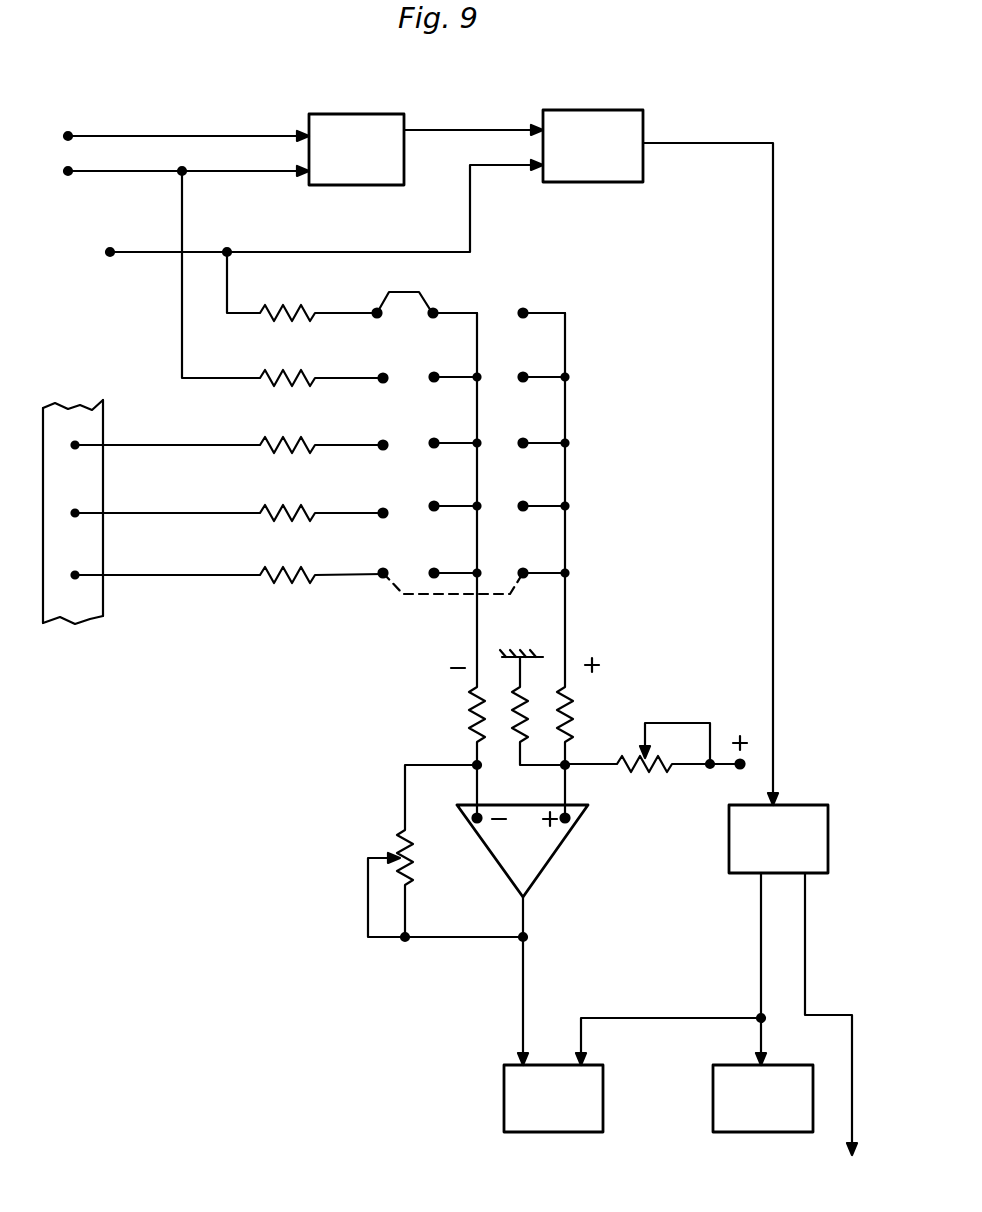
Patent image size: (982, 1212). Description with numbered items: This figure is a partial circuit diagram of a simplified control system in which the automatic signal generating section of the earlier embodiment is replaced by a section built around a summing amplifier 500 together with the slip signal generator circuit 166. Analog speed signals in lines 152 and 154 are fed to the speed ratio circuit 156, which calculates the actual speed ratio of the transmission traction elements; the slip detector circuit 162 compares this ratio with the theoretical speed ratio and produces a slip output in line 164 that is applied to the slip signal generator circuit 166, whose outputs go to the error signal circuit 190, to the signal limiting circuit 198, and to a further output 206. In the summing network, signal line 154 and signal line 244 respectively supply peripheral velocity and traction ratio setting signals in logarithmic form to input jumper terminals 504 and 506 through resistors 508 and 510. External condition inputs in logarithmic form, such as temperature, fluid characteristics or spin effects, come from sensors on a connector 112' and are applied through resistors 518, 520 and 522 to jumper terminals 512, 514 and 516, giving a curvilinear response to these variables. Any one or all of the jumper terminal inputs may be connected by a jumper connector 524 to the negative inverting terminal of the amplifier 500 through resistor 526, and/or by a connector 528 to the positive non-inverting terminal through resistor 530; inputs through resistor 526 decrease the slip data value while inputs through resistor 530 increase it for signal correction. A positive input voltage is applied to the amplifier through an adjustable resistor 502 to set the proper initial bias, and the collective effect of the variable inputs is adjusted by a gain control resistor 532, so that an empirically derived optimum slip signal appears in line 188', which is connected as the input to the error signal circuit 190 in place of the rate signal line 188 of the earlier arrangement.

The analog speed signal line 152 is at (152, 134).
The analog speed signal line 154 is at (144, 172).
The speed ratio circuit 156 is at (356, 149).
The slip detector circuit 162 is at (593, 146).
The traction ratio setting signal line 244 is at (324, 208).
The slip signal line 164 is at (780, 340).
The slip signal generating circuit 166 is at (778, 839).
The signal line 188 is at (671, 969).
The optimum slip signal output line 188' is at (485, 981).
The error signal circuit 190 is at (553, 1098).
The signal limiting circuit 198 is at (763, 1098).
The output line 206 is at (838, 1030).
The summing amplifier 500 is at (545, 847).
The adjustable resistor 502 is at (657, 773).
The input jumper terminal 504 is at (383, 381).
The input jumper terminal 506 is at (377, 313).
The resistor 508 is at (284, 372).
The resistor 510 is at (285, 307).
The jumper terminal 512 is at (383, 448).
The jumper terminal 514 is at (383, 516).
The jumper terminal 516 is at (383, 580).
The resistor 518 is at (276, 438).
The resistor 520 is at (276, 506).
The resistor 522 is at (276, 568).
The jumper connector 524 is at (428, 303).
The resistor 526 is at (468, 720).
The connector 528 is at (519, 582).
The resistor 530 is at (577, 722).
The gain control resistor 532 is at (402, 852).
The sensor connector 112' is at (86, 544).